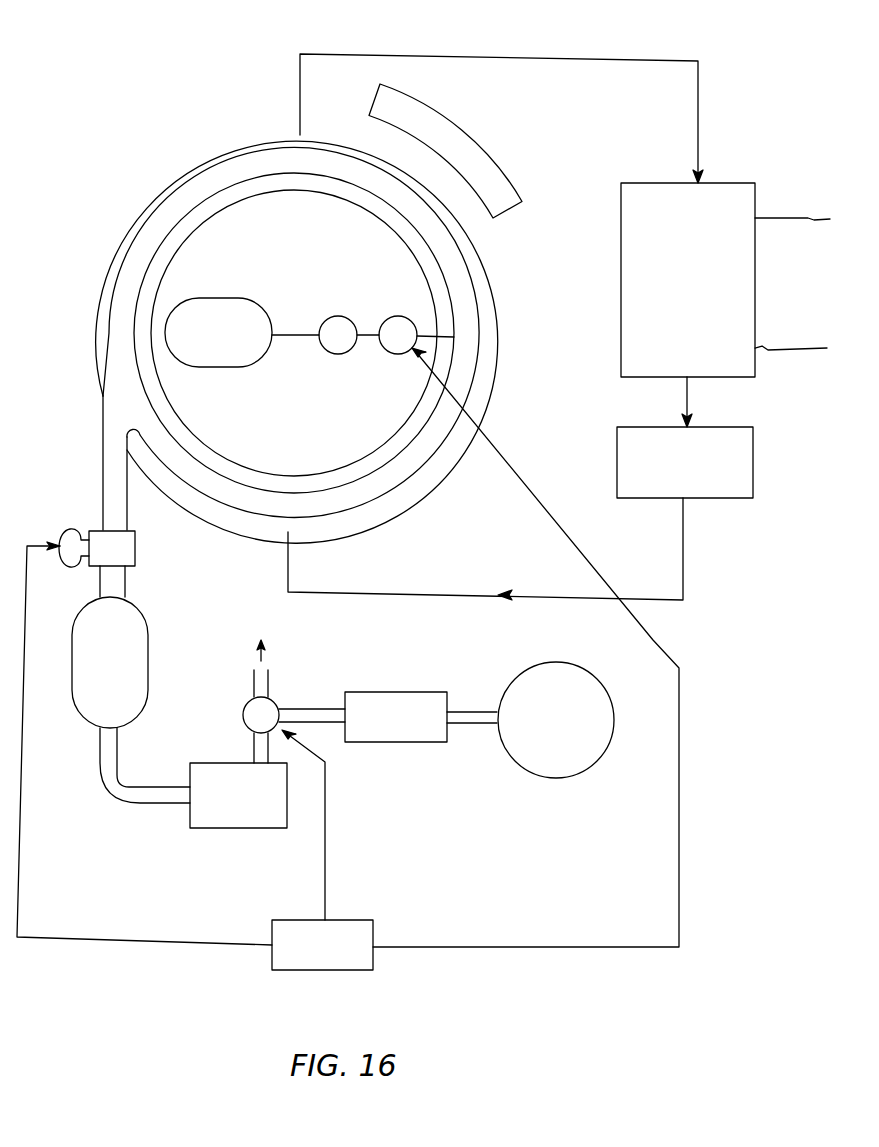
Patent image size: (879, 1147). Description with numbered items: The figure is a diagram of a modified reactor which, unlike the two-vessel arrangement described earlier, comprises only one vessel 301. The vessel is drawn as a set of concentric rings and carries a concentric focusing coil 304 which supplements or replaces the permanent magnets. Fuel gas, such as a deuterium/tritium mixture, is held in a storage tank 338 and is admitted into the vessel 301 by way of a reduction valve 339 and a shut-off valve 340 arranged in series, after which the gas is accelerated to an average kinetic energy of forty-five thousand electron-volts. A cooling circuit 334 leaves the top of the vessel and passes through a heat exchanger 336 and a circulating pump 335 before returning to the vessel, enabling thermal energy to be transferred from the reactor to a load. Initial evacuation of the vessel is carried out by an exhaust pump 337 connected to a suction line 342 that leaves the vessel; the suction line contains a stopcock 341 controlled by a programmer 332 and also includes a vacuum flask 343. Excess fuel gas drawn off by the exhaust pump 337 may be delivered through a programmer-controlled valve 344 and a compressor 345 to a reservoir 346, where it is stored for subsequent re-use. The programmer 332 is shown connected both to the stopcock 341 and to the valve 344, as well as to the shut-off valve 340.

The vessel 301 is at (498, 278).
The focusing coil 304 is at (448, 135).
The programmer 332 is at (325, 970).
The cooling circuit 334 is at (626, 58).
The circulating pump 335 is at (725, 493).
The heat exchanger 336 is at (737, 192).
The exhaust pump 337 is at (222, 829).
The storage tank 338 is at (213, 297).
The reduction valve 339 is at (340, 354).
The shut-off valve 340 is at (398, 318).
The stopcock 341 is at (135, 549).
The suction line 342 is at (105, 483).
The vacuum flask 343 is at (135, 621).
The programmer-controlled valve 344 is at (244, 708).
The compressor 345 is at (410, 745).
The reservoir 346 is at (582, 775).